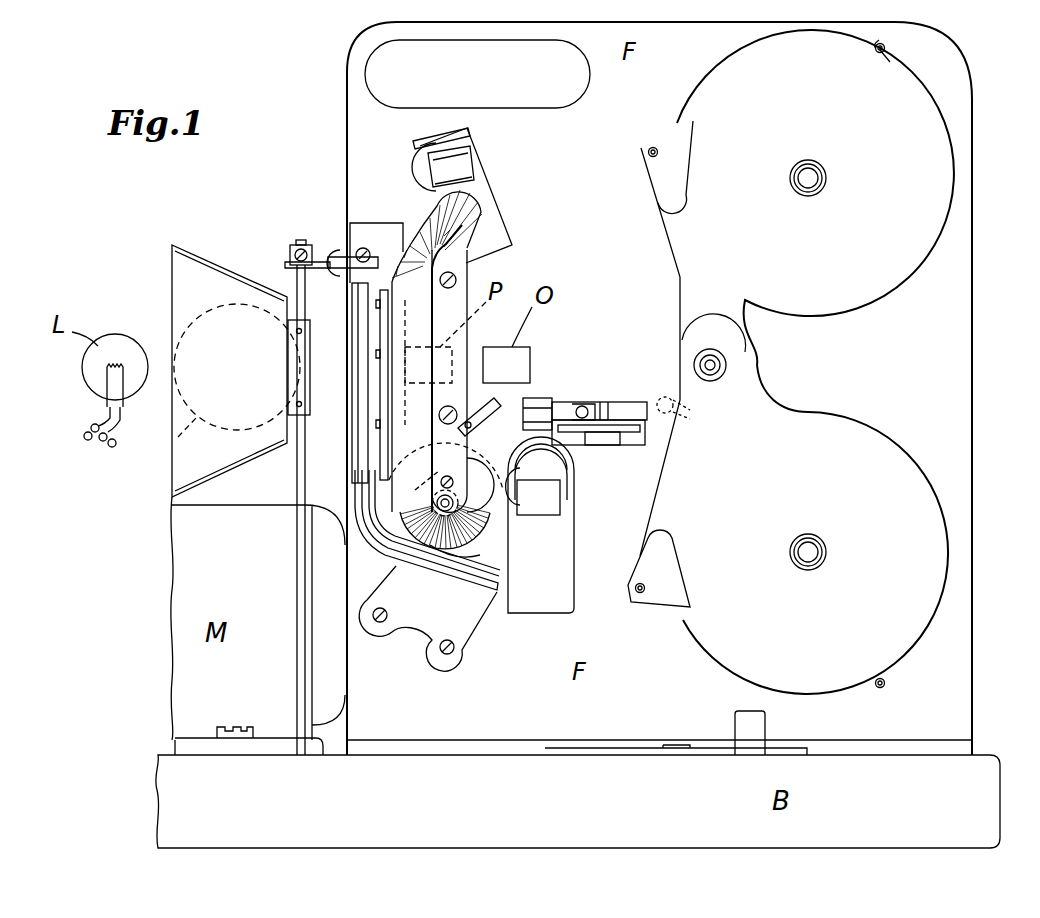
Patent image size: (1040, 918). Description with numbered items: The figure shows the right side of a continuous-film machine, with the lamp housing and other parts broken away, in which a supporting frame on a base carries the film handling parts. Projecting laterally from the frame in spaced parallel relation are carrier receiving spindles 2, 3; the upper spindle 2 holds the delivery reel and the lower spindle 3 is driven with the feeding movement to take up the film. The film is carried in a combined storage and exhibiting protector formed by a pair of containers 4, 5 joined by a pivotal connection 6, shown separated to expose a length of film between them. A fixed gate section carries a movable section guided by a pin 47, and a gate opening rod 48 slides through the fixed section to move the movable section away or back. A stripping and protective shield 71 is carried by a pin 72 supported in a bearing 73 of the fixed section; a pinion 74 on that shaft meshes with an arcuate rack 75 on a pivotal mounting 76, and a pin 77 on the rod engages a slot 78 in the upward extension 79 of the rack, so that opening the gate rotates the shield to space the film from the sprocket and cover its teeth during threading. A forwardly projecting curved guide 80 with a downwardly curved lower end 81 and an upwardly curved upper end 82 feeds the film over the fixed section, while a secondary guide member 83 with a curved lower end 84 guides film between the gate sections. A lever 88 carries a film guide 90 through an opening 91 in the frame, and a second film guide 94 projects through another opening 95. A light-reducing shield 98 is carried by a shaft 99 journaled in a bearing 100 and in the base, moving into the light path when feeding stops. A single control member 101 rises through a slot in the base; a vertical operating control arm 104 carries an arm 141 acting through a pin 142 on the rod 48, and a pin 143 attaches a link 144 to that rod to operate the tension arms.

The upper carrier receiving spindle 2 is at (820, 176).
The lower carrier receiving spindle 3 is at (820, 551).
The container 4 is at (896, 272).
The container 5 is at (870, 442).
The pivotal connection 6 is at (704, 358).
The pin 47 is at (340, 256).
The gate opening rod 48 is at (575, 404).
The stripping and protective shield 71 is at (472, 480).
The pin 72 is at (490, 535).
The bearing 73 is at (458, 506).
The pinion 74 is at (436, 506).
The arcuate rack 75 is at (438, 486).
The pivotal mounting 76 is at (460, 452).
The pin 77 is at (560, 406).
The slot 78 is at (475, 400).
The upward extension 79 is at (538, 398).
The guide 80 is at (433, 381).
The lower end 81 is at (470, 557).
The upper end 82 is at (470, 205).
The secondary guide member 83 is at (353, 478).
The curved lower end 84 is at (392, 540).
The lever 88 is at (460, 160).
The film guide 90 is at (418, 173).
The opening 91 is at (415, 139).
The film guide 94 is at (562, 463).
The opening 95 is at (555, 527).
The light-reducing or protective shield 98 is at (178, 440).
The shaft 99 is at (307, 472).
The bearing 100 is at (290, 255).
The control member 101 is at (762, 720).
The vertical operating control arm 104 is at (623, 420).
The arm 141 is at (623, 432).
The pin 142 is at (565, 437).
The pin 143 is at (616, 400).
The link 144 is at (603, 403).